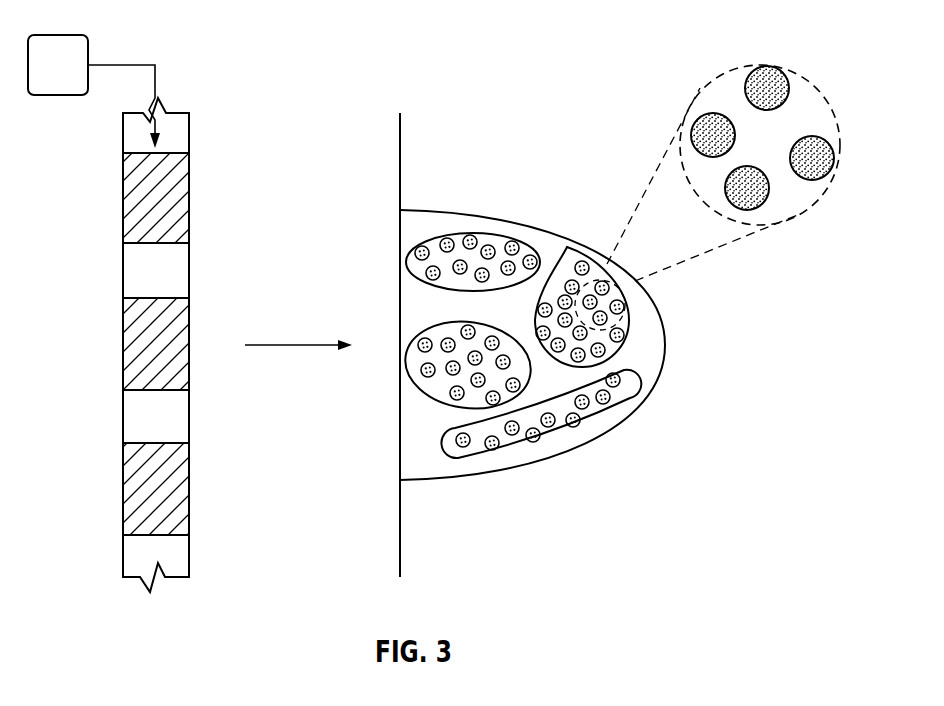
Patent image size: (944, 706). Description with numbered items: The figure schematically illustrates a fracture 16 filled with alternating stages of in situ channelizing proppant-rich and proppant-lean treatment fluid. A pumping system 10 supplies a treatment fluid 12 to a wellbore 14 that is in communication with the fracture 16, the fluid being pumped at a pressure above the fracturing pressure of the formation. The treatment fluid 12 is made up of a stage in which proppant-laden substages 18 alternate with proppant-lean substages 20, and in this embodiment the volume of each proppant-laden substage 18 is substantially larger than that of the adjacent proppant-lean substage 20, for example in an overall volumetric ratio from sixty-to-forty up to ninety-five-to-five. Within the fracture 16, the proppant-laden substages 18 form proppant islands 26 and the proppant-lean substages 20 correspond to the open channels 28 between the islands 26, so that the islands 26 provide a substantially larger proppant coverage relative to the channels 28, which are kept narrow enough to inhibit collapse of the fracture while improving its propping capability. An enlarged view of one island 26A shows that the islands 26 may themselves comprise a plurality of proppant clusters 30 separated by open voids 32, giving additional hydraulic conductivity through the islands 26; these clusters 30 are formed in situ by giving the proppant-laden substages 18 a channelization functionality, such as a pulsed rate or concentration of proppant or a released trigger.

The pumping system 10 is at (58, 34).
The treatment fluid 12 is at (118, 345).
The wellbore 14 is at (123, 494).
The fracture 16 is at (555, 231).
The proppant-laden substage 18 is at (135, 197).
The proppant-lean substage 20 is at (135, 277).
The proppant island 26 is at (488, 232).
The proppant island 26A is at (800, 213).
The open channel 28 is at (553, 373).
The proppant cluster 30 is at (770, 78).
The open void 32 is at (510, 442).